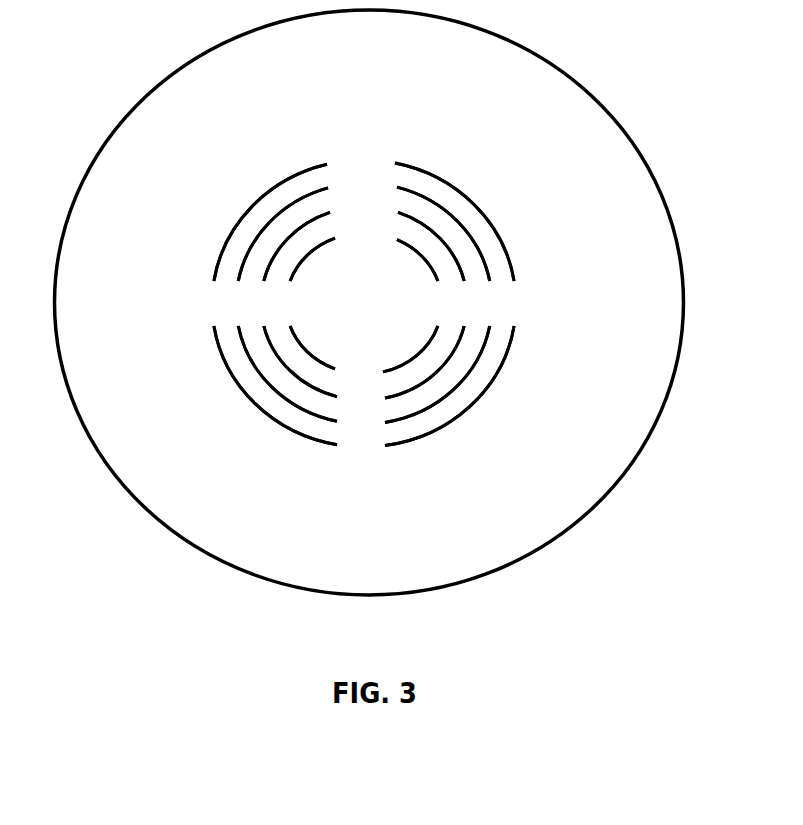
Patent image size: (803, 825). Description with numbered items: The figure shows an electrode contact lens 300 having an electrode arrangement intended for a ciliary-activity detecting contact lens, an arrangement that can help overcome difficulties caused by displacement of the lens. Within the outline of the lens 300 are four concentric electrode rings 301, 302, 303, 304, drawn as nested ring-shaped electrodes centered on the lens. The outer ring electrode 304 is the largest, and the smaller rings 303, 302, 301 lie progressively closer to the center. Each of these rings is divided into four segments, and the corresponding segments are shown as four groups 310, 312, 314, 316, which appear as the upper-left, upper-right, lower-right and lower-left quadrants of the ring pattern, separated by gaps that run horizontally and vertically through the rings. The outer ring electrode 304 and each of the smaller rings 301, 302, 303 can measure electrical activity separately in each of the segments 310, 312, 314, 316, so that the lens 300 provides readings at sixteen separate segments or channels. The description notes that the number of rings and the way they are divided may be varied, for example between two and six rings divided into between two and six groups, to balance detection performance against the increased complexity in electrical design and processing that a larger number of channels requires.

The lens 300 is at (99, 104).
The concentric electrode ring 301 is at (364, 301).
The concentric electrode ring 302 is at (364, 299).
The concentric electrode ring 303 is at (363, 298).
The outer ring electrode 304 is at (364, 296).
The segment group 310 is at (221, 173).
The segment group 312 is at (479, 173).
The segment group 314 is at (469, 440).
The segment group 316 is at (250, 431).